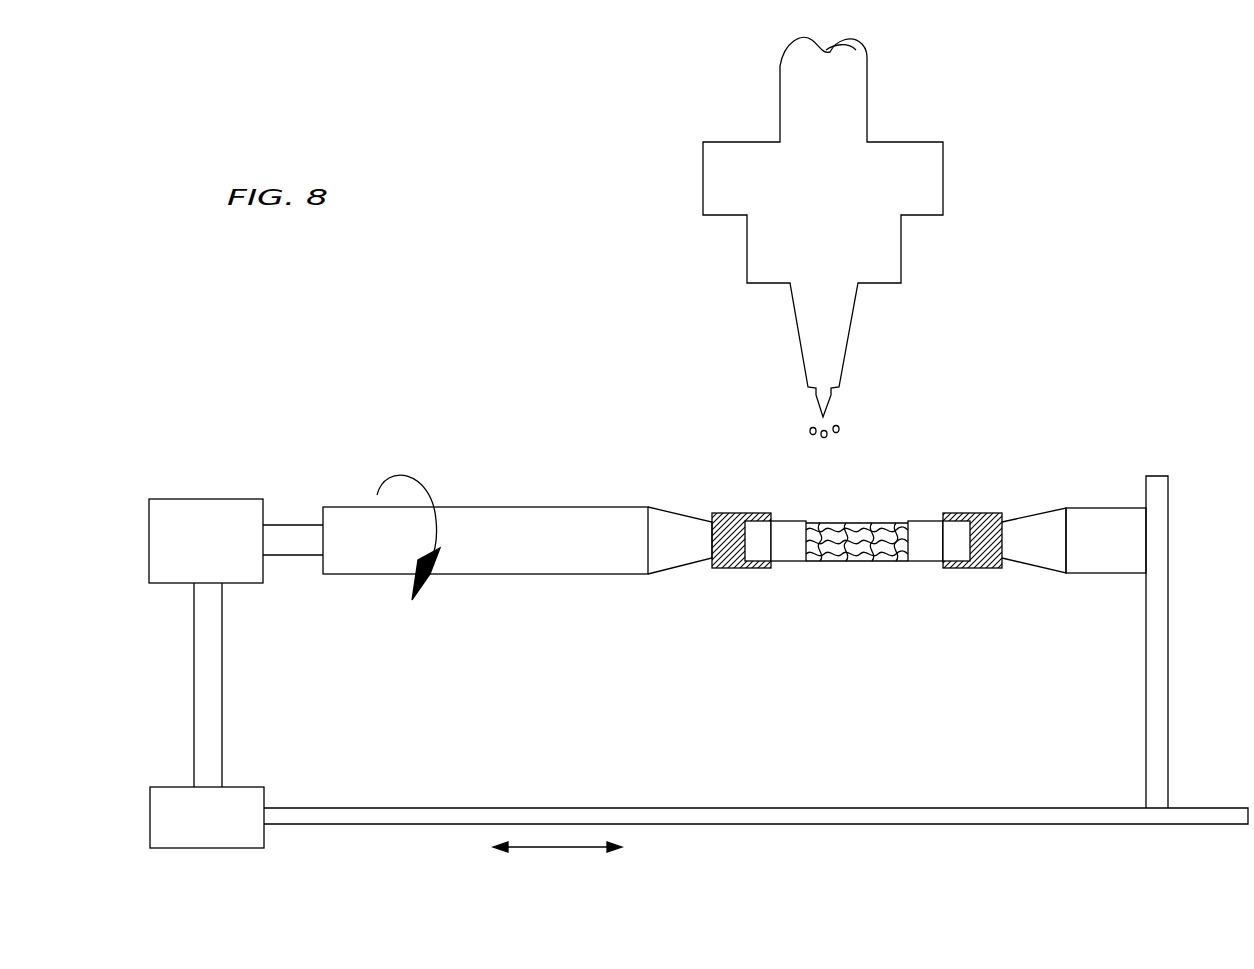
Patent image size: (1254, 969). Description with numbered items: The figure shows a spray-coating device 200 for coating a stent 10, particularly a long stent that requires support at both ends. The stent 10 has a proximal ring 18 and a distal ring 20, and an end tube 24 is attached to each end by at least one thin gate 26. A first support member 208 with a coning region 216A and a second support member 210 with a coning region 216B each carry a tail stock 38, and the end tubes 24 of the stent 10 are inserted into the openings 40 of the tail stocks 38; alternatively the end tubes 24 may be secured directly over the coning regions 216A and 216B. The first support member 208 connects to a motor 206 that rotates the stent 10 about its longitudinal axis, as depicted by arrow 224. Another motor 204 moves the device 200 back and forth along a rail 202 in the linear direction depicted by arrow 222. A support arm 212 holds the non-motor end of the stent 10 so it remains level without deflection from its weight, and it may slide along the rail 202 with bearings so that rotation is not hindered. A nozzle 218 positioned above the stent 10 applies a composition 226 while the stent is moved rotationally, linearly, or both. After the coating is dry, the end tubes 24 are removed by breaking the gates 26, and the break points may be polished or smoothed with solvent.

The spray-coating device 200 is at (1108, 224).
The rail 202 is at (847, 824).
The motor 204 is at (243, 787).
The motor 206 is at (206, 499).
The first support member 208 is at (511, 505).
The second support member 210 is at (1105, 507).
The support arm 212 is at (1160, 476).
The coning region 216A is at (676, 545).
The coning region 216B is at (1030, 568).
The nozzle 218 is at (910, 142).
The arrow 222 is at (558, 847).
The arrow 224 is at (400, 478).
The composition 226 is at (840, 425).
The stent 10 is at (856, 503).
The proximal ring 18 is at (826, 521).
The distal ring 20 is at (898, 562).
The end tube 24 is at (928, 520).
The gate 26 is at (808, 562).
The tail stock 38 is at (745, 515).
The opening 40 is at (962, 514).